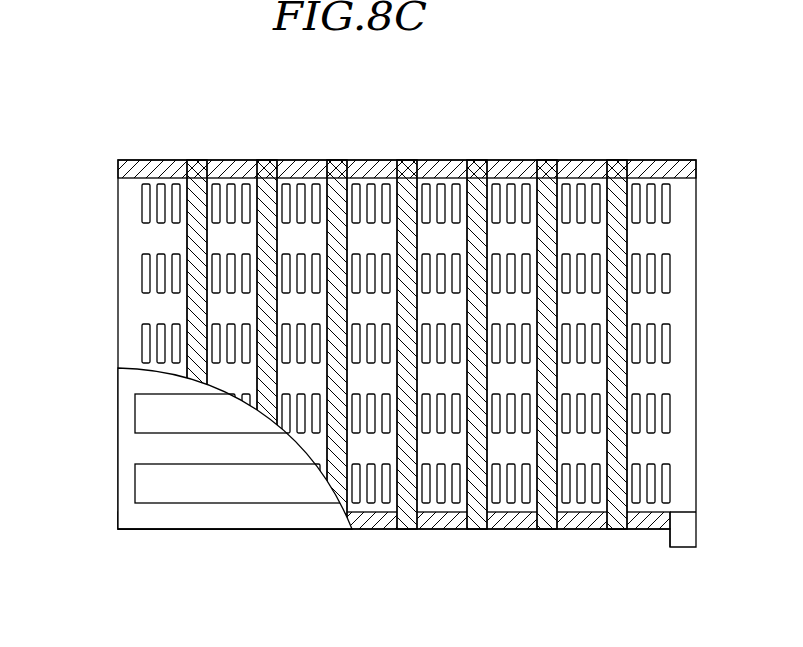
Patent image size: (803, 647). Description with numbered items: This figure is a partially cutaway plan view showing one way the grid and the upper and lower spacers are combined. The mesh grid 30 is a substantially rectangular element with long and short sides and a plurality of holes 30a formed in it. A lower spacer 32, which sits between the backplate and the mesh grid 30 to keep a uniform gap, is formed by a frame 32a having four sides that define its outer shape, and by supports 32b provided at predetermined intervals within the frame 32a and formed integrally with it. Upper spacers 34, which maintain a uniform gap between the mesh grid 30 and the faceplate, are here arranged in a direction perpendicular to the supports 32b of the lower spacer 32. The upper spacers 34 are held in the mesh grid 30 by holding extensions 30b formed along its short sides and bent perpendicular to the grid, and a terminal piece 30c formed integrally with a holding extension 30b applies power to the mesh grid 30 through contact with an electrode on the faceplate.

The mesh grid 30 is at (678, 217).
The holes 30a is at (158, 217).
The holding extensions 30b is at (580, 531).
The terminal piece 30c is at (680, 548).
The lower spacer 32 is at (116, 499).
The frame 32a is at (180, 530).
The supports 32b is at (145, 448).
The upper spacers 34 is at (265, 208).